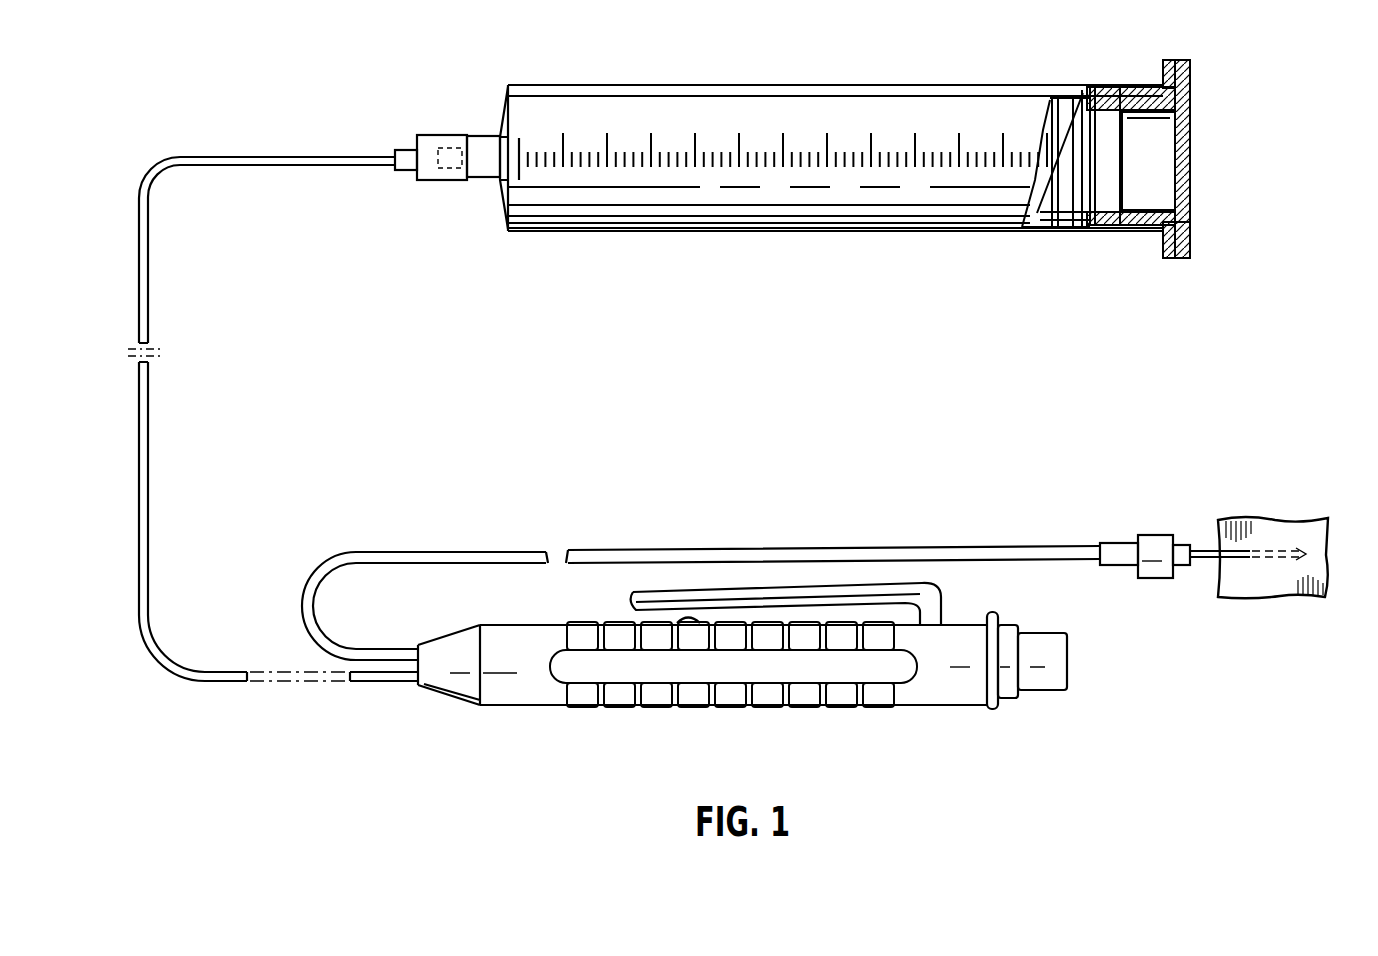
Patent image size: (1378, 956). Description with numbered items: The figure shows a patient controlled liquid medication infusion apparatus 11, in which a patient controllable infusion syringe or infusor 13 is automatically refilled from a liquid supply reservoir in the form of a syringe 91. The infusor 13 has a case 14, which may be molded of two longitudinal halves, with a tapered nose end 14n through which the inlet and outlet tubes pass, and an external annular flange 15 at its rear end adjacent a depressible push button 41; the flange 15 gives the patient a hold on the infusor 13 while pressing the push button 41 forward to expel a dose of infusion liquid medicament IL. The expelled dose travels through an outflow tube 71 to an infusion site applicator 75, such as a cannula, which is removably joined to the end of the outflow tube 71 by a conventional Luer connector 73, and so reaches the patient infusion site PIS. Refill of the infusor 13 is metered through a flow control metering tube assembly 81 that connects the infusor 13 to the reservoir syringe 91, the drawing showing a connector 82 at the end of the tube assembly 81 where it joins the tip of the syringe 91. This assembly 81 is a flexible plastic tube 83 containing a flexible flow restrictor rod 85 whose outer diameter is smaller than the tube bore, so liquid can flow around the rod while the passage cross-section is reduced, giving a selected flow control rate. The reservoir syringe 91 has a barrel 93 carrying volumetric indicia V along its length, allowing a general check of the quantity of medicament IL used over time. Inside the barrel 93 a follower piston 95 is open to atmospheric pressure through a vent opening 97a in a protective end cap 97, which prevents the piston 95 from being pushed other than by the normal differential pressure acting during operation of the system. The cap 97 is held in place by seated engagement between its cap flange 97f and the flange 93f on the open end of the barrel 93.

The patient controllable analgesic infusion apparatus 11 is at (534, 736).
The infusor 13 is at (514, 620).
The case 14 is at (694, 708).
The tapered nose end 14n is at (466, 693).
The external annular flange 15 is at (993, 708).
The depressible push button 41 is at (1068, 661).
The outflow tube 71 is at (674, 550).
The Luer connector 73 is at (1143, 534).
The infusion site applicator 75 is at (1203, 548).
The infusion site PIS is at (1277, 588).
The flow control metering tube assembly 81 is at (334, 154).
The tubing connector 82 is at (452, 136).
The flexible plastic tube 83 is at (152, 548).
The flexible flow restrictor rod 85 is at (350, 672).
The syringe 91 is at (677, 82).
The barrel 93 is at (462, 183).
The flange 93f is at (1192, 78).
The follower piston 95 is at (1073, 230).
The protective end cap 97 is at (1190, 107).
The vent opening 97a is at (1178, 153).
The cap flange 97f is at (1192, 245).
The infusion liquid medicament IL is at (624, 213).
The volumetric indicia V is at (697, 160).